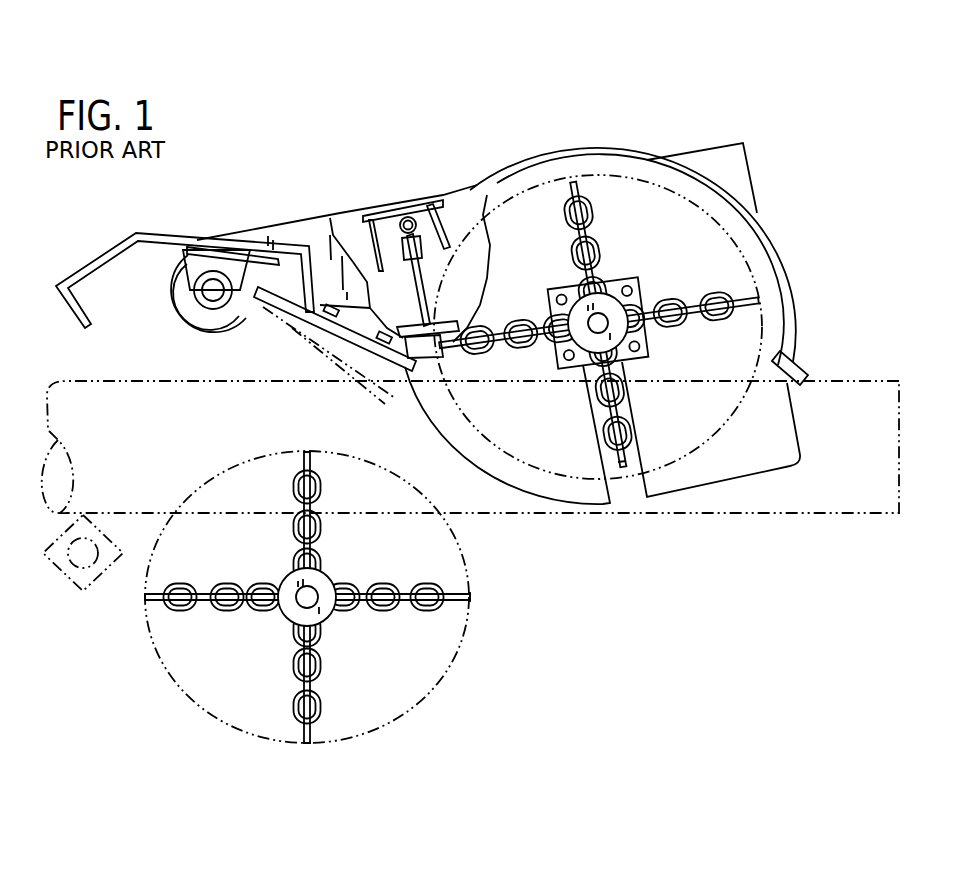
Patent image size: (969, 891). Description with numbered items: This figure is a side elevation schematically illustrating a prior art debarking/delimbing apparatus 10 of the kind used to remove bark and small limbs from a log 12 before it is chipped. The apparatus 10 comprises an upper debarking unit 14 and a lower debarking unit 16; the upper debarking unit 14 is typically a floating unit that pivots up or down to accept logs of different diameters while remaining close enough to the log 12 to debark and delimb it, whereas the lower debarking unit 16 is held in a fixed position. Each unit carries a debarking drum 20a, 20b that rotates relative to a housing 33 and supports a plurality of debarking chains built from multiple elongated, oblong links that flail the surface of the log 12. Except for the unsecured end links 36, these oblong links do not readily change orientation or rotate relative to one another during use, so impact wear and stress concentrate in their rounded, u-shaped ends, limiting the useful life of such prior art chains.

The debarking/delimbing apparatus 10 is at (326, 126).
The log 12 is at (768, 515).
The upper debarking unit 14 is at (606, 141).
The lower debarking unit 16 is at (327, 628).
The debarking drum 20a is at (607, 291).
The debarking drum 20b is at (269, 631).
The housing 33 is at (793, 278).
The end link 36 is at (622, 470).